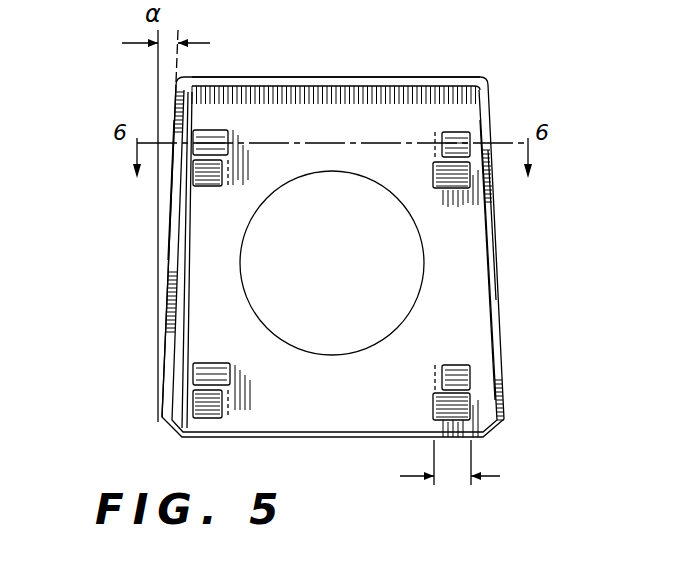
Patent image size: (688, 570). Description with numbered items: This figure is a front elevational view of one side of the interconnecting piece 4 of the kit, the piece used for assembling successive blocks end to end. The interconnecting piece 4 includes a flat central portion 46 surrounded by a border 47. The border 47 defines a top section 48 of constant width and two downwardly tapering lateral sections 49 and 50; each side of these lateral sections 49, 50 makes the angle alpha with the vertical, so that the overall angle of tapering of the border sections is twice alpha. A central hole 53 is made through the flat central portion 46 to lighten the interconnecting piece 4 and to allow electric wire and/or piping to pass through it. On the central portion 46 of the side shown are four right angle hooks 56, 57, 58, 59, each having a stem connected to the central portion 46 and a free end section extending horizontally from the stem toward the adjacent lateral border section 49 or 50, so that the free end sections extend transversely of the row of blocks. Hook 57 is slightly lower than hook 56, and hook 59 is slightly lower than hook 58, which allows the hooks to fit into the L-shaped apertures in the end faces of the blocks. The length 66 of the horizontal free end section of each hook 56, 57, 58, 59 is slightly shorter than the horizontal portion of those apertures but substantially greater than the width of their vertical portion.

The interconnecting piece 4 is at (108, 237).
The flat central portion 46 is at (193, 272).
The border 47 is at (498, 268).
The top section 48 is at (376, 80).
The lateral section 49 is at (176, 193).
The lateral section 50 is at (497, 310).
The central hole 53 is at (265, 298).
The right angle hook 56 is at (205, 140).
The right angle hook 57 is at (460, 178).
The right angle hook 58 is at (200, 378).
The right angle hook 59 is at (462, 405).
The length of the horizontal free end section 66 is at (452, 478).